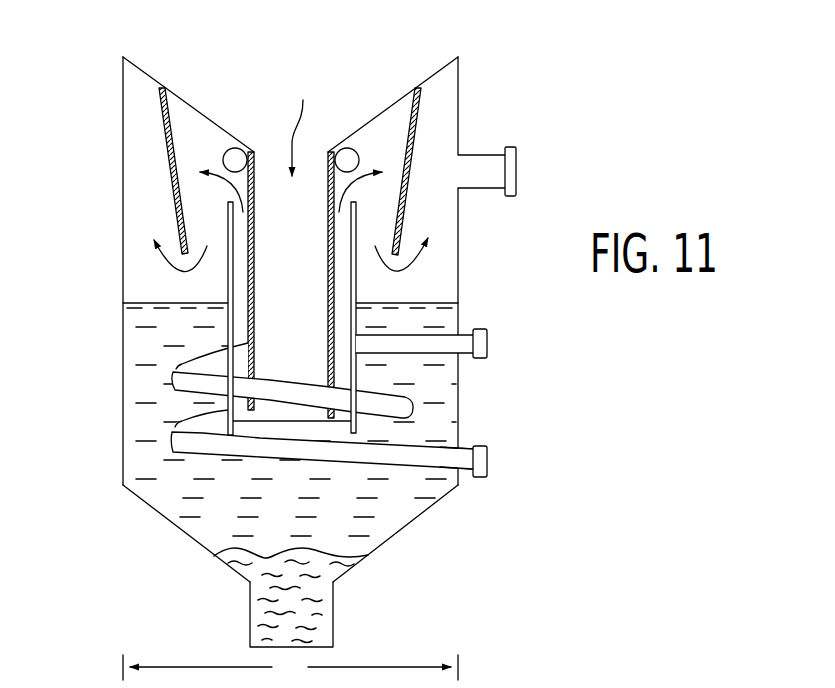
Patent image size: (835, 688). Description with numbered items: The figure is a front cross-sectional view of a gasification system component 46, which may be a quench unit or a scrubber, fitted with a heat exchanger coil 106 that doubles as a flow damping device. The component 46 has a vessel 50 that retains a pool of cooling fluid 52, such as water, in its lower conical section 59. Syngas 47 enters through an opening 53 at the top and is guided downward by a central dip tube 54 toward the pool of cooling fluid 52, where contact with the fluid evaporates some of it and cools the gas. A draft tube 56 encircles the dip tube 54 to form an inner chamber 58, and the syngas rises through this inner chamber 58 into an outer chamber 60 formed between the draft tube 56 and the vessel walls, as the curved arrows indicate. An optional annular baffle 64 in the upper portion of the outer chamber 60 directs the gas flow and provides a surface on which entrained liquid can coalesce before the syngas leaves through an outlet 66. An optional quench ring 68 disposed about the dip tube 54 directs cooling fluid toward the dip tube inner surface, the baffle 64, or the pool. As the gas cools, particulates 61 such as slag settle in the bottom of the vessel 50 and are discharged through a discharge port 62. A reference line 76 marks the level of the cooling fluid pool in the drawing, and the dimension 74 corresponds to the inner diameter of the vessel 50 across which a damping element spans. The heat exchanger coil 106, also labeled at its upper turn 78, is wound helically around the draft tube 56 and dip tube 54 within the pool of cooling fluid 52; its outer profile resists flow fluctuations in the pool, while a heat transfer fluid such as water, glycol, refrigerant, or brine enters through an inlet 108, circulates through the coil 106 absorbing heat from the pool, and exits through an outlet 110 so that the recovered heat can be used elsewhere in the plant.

The gasification system component 46 is at (489, 39).
The syngas 47 is at (301, 130).
The vessel 50 is at (459, 245).
The cooling fluid 52 is at (137, 469).
The opening 53 is at (277, 156).
The dip tube 54 is at (255, 291).
The draft tube 56 is at (228, 279).
The inner chamber 58 is at (328, 258).
The conical section 59 is at (405, 527).
The outer chamber 60 is at (446, 281).
The particulates 61 is at (252, 605).
The discharge port 62 is at (335, 606).
The annular baffle 64 is at (419, 138).
The outlet 66 is at (513, 148).
The quench ring 68 is at (356, 149).
The outer diameter 74 is at (290, 668).
The liquid surface 76 is at (130, 302).
The helical coil 78 is at (295, 420).
The heat exchanger coil 106 is at (256, 461).
The inlet 108 is at (488, 462).
The outlet 110 is at (488, 343).